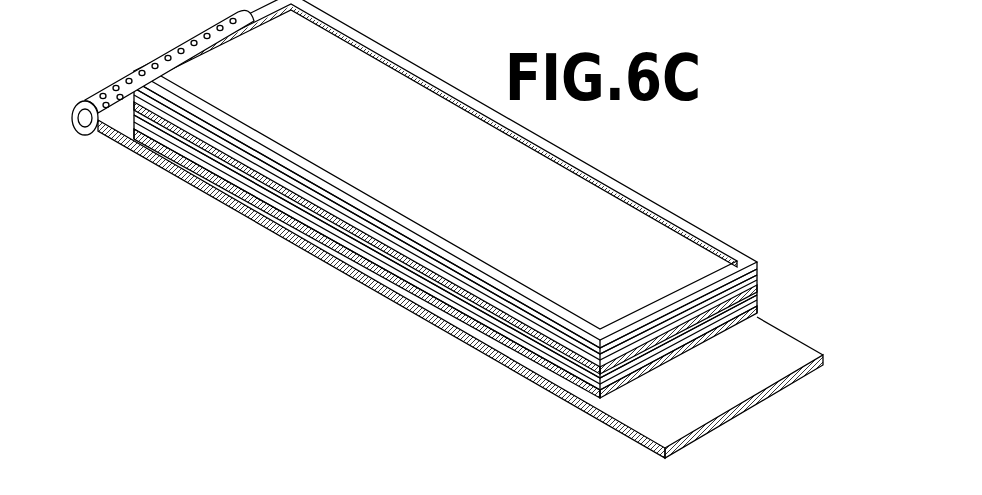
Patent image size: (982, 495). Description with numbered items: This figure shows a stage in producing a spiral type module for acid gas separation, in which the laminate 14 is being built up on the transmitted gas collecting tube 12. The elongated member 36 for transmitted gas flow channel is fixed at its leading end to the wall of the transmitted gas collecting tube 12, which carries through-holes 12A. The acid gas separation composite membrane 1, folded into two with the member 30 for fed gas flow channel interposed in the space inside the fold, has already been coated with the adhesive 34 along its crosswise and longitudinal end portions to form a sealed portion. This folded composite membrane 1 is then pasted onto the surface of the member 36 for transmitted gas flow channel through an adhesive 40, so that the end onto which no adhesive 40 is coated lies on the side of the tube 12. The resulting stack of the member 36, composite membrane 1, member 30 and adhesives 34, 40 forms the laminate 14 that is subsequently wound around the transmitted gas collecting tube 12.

The acid gas separation composite membrane 1 is at (757, 272).
The transmitted gas collecting tube 12 is at (110, 85).
The through-holes 12A is at (163, 52).
The laminate 14 is at (828, 197).
The member for fed gas flow channel 30 is at (757, 285).
The adhesive 34 is at (757, 310).
The member for transmitted gas flow channel 36 is at (823, 353).
The adhesive 40 is at (673, 206).